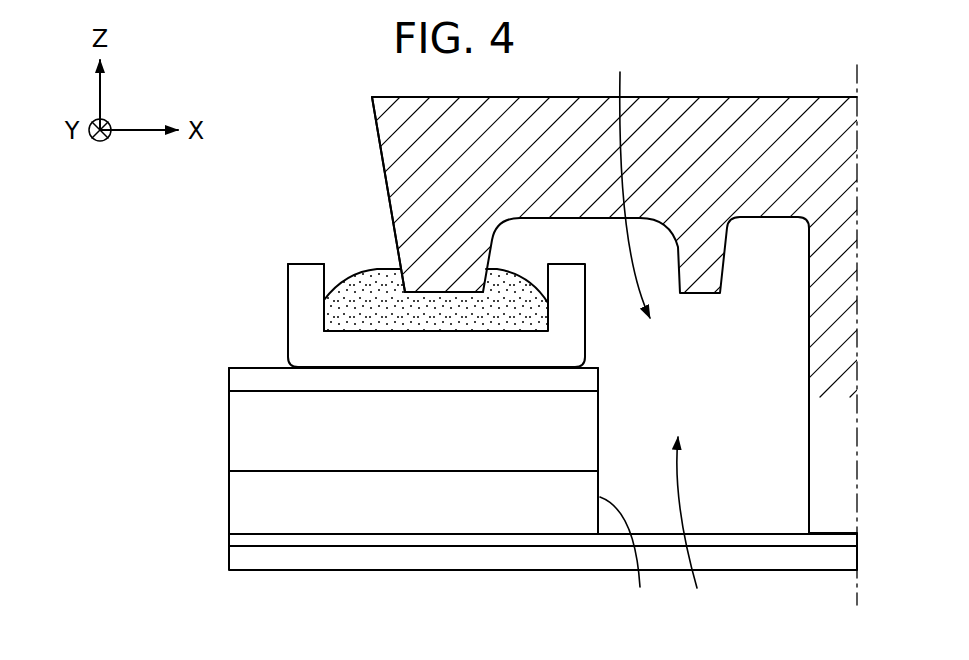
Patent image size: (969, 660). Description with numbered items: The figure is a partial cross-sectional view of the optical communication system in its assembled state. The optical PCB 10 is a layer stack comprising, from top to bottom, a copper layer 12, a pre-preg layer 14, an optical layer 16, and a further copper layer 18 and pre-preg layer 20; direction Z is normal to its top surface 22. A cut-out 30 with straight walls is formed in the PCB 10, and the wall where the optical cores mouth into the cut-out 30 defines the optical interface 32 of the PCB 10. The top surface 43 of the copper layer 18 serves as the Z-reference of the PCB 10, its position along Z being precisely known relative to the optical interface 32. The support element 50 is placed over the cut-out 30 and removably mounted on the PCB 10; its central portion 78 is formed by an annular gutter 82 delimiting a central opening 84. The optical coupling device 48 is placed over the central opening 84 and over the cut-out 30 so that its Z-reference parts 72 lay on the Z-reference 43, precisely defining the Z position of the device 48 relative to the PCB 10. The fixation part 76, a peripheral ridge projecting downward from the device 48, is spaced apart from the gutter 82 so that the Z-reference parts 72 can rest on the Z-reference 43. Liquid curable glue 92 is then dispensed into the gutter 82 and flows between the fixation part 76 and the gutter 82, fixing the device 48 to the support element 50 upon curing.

The optical PCB 10 is at (454, 461).
The copper layer 12 is at (376, 359).
The pre-preg layer 14 is at (248, 447).
The optical layer 16 is at (248, 502).
The copper layer 18 is at (248, 540).
The pre-preg layer 20 is at (248, 560).
The top surface 22 is at (263, 367).
The cut-out 30 is at (695, 526).
The optical interface 32 is at (626, 556).
The top surface of copper layer 43 is at (743, 533).
The optical coupling device 48 is at (368, 118).
The support element 50 is at (373, 265).
The Z-reference parts 72 is at (833, 533).
The fixation part 76 is at (397, 188).
The central portion 78 is at (270, 295).
The annular gutter 82 is at (303, 277).
The central opening 84 is at (627, 180).
The glue 92 is at (375, 292).